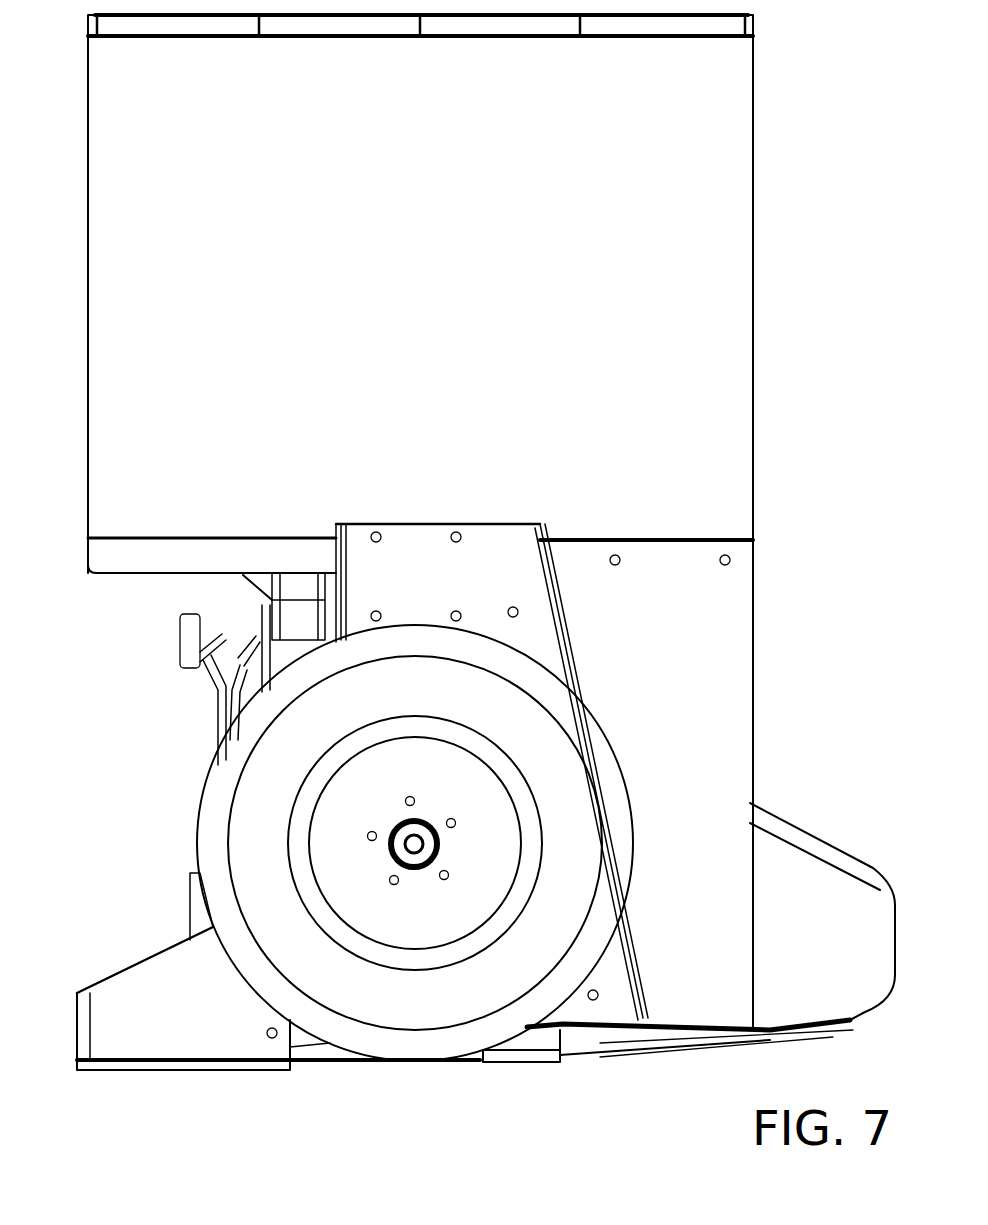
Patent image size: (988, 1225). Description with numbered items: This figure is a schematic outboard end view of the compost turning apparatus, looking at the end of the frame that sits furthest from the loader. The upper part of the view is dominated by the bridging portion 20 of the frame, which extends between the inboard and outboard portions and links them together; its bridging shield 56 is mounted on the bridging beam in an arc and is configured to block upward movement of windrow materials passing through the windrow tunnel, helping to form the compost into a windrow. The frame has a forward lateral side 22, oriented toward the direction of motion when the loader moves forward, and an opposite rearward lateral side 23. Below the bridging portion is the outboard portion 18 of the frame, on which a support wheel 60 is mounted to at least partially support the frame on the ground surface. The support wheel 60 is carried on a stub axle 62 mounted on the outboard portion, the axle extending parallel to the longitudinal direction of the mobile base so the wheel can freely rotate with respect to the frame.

The bridging portion 20 is at (772, 140).
The bridging shield 56 is at (668, 300).
The forward lateral side 22 is at (783, 398).
The outboard portion 18 is at (762, 622).
The rearward lateral side 23 is at (64, 592).
The support wheel 60 is at (596, 758).
The stub axle 62 is at (414, 848).